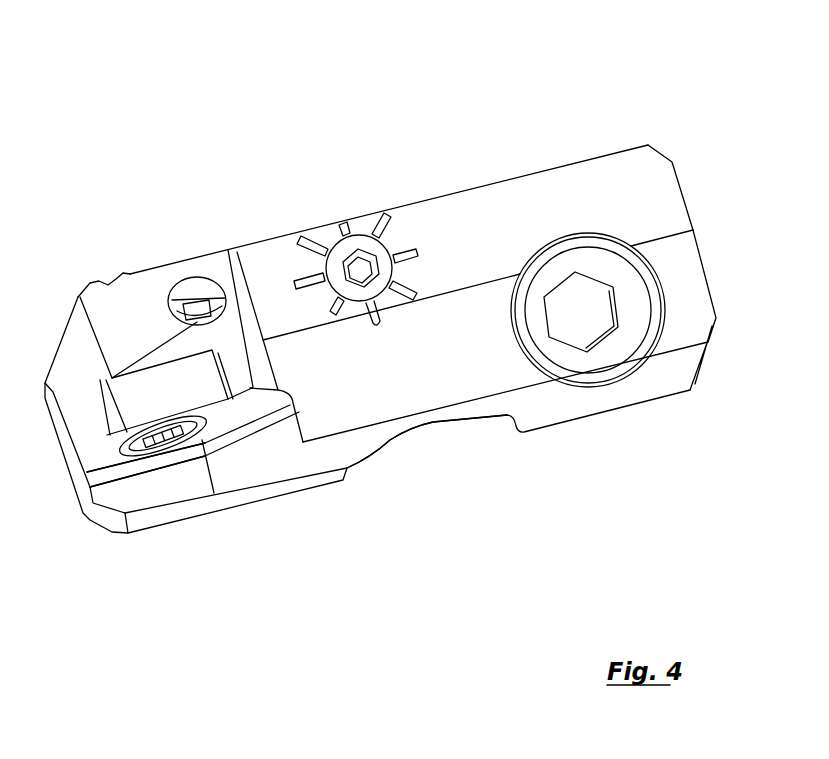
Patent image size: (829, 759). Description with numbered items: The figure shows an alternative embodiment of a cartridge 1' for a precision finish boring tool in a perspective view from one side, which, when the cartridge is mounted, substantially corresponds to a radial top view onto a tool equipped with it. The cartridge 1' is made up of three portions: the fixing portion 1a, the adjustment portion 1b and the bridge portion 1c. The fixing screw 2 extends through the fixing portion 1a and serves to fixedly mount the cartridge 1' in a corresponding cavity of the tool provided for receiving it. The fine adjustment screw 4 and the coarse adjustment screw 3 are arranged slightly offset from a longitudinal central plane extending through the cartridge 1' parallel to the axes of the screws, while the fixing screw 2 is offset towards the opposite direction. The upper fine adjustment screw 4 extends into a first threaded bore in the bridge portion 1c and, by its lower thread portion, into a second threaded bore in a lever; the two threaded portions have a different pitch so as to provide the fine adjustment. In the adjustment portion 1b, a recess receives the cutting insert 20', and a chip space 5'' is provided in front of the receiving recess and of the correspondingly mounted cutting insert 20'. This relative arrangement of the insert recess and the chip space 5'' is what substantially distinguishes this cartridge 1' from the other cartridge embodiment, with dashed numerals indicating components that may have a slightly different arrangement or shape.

The cartridge 1' is at (416, 282).
The fixing portion 1a is at (647, 383).
The adjustment portion 1b is at (140, 307).
The bridge portion 1c is at (433, 418).
The fixing screw 2 is at (594, 262).
The coarse adjustment screw 3 is at (183, 297).
The fine adjustment screw 4 is at (340, 250).
The chip space 5'' is at (150, 540).
The cutting insert 20' is at (206, 495).